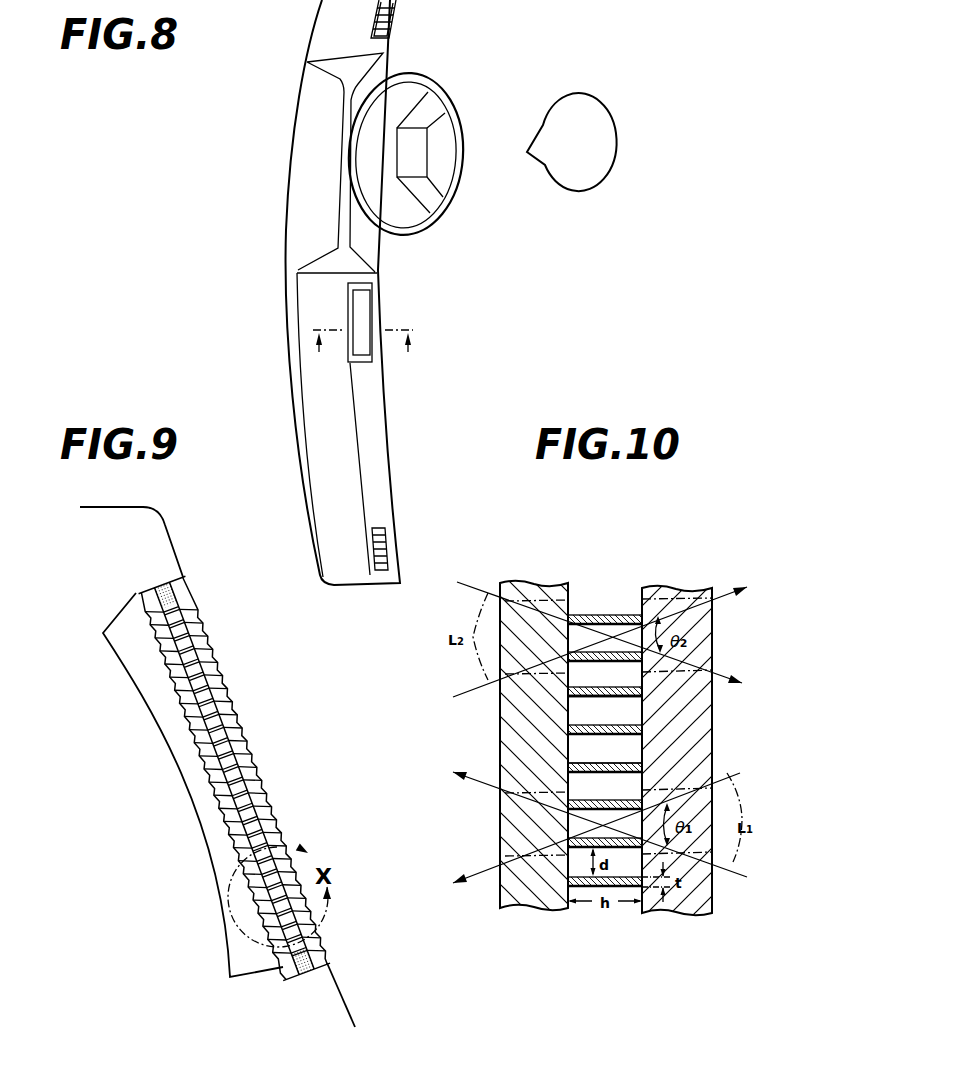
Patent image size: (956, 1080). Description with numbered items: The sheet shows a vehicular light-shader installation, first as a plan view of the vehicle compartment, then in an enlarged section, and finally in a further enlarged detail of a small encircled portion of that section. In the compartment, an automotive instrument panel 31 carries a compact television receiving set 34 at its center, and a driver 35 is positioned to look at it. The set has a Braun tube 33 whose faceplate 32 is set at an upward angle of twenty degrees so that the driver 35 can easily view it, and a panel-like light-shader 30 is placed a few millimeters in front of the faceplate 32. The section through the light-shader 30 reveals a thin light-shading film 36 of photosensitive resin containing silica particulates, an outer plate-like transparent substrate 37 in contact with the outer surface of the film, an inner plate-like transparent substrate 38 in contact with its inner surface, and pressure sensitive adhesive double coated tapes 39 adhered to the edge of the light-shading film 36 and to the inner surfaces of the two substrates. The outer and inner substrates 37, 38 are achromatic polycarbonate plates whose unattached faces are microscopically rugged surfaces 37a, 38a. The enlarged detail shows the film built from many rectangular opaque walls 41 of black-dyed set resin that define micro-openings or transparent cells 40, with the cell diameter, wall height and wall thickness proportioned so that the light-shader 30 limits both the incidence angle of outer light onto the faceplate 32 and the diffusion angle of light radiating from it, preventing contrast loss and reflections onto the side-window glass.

In FIG. 9, the light-shader 30 is at (218, 603).
In FIG. 8, the instrument panel 31 is at (347, 478).
In FIG. 9, the faceplate 32 is at (160, 690).
In FIG. 9, the Braun tube 33 is at (160, 845).
In FIG. 8, the compact television receiving set 34 is at (363, 302).
In FIG. 8, the driver 35 is at (593, 112).
In FIG. 9, the light-shading film 36 is at (240, 788).
In FIG. 10, the light-shading film 36 is at (607, 601).
In FIG. 9, the outer plate-like transparent substrate 37 is at (230, 703).
In FIG. 10, the outer plate-like transparent substrate 37 is at (698, 893).
In FIG. 9, the microscopically rugged unattached surface 37a is at (213, 653).
In FIG. 9, the inner plate-like transparent substrate 38 is at (245, 740).
In FIG. 10, the inner plate-like transparent substrate 38 is at (527, 893).
In FIG. 9, the microscopically rugged unattached surface 38a is at (233, 840).
In FIG. 9, the pressure sensitive adhesive double coated tape 39 is at (169, 578).
In FIG. 10, the transparent cell 40 is at (625, 748).
In FIG. 10, the opaque wall 41 is at (625, 697).